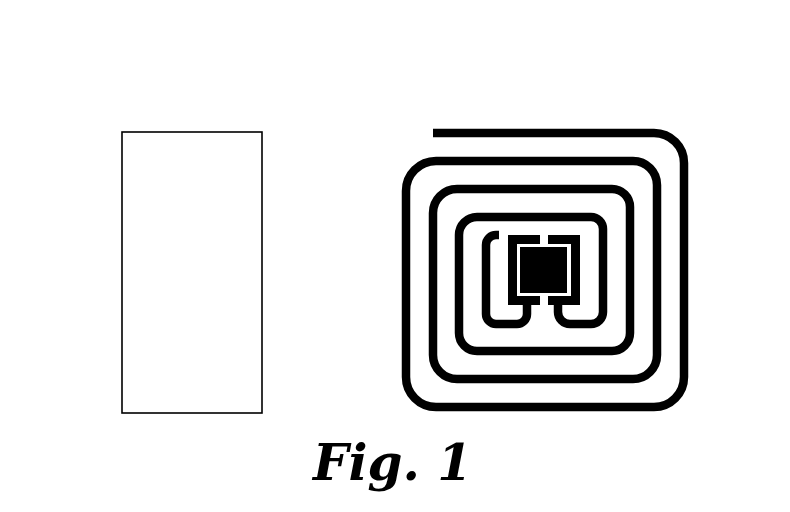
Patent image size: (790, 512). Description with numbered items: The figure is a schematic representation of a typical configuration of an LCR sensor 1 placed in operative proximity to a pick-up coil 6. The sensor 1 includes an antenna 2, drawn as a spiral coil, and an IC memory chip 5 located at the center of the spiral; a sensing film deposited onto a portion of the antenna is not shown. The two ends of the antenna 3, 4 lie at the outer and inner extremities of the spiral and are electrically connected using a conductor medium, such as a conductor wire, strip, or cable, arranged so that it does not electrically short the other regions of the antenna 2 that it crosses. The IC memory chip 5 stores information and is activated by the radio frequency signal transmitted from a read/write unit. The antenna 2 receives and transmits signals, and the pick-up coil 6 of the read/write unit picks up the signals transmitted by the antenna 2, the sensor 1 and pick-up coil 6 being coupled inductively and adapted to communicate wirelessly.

The LCR sensor 1 is at (599, 449).
The antenna 2 is at (690, 343).
The end of the antenna 3 is at (433, 133).
The end of the antenna 4 is at (502, 236).
The IC memory chip 5 is at (567, 260).
The pick-up coil 6 is at (82, 200).